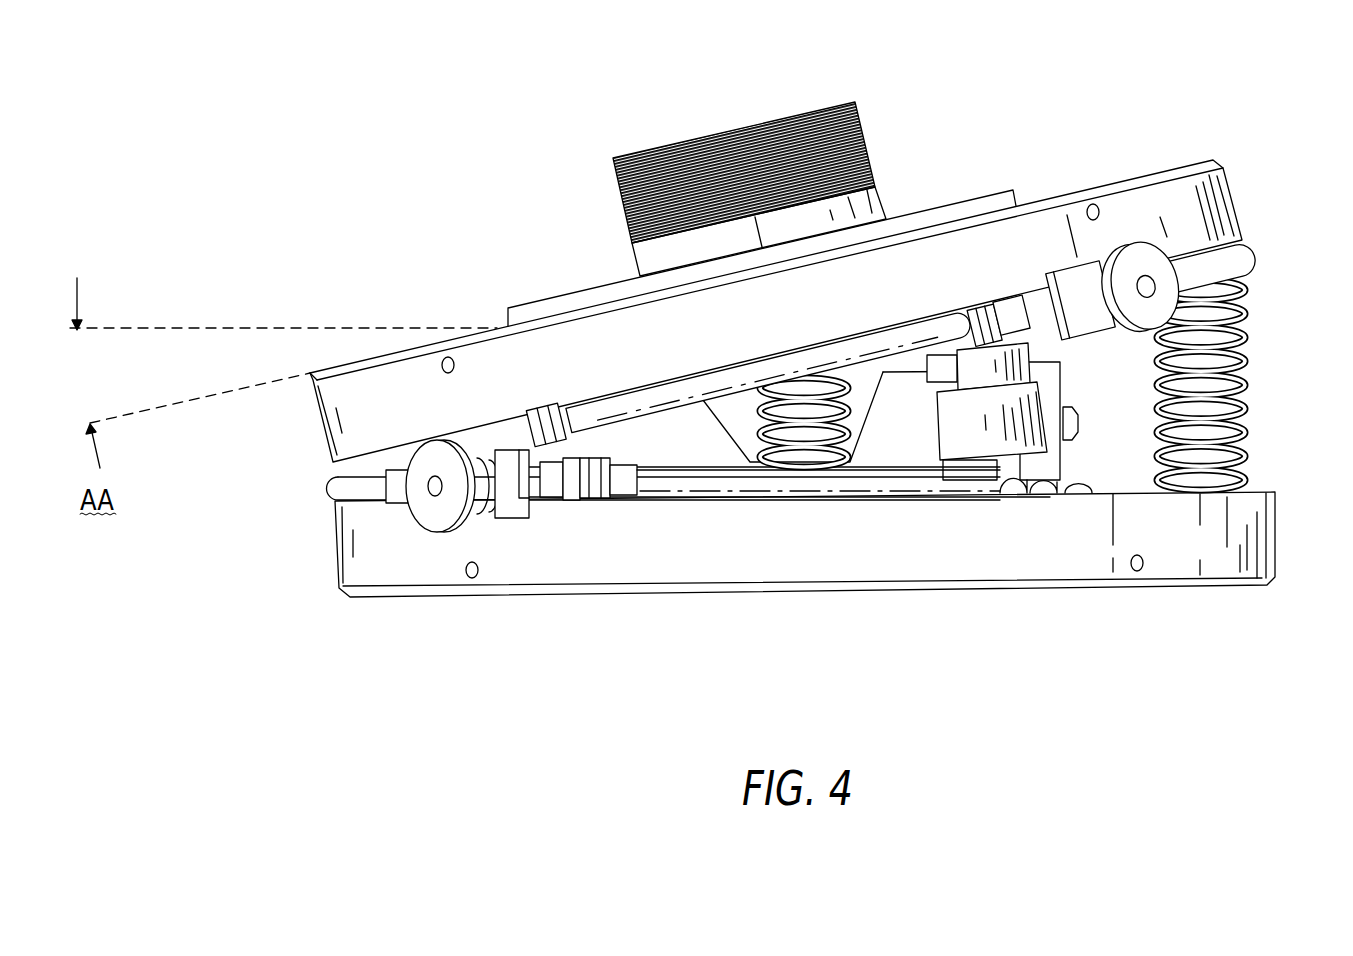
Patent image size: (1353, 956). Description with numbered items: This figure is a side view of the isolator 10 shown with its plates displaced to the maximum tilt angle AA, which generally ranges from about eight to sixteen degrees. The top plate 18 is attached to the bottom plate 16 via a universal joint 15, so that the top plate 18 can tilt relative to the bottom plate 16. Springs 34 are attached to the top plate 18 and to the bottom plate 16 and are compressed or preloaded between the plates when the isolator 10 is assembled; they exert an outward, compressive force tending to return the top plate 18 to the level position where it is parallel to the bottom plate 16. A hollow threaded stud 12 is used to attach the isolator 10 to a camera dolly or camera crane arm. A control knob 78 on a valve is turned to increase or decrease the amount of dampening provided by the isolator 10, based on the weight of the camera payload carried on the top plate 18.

The isolator 10 is at (1107, 133).
The hollow threaded stud 12 is at (867, 138).
The universal joint 15 is at (848, 409).
The bottom plate 16 is at (1262, 522).
The top plate 18 is at (1224, 212).
The springs 34 is at (802, 450).
The control knob 78 is at (1163, 281).